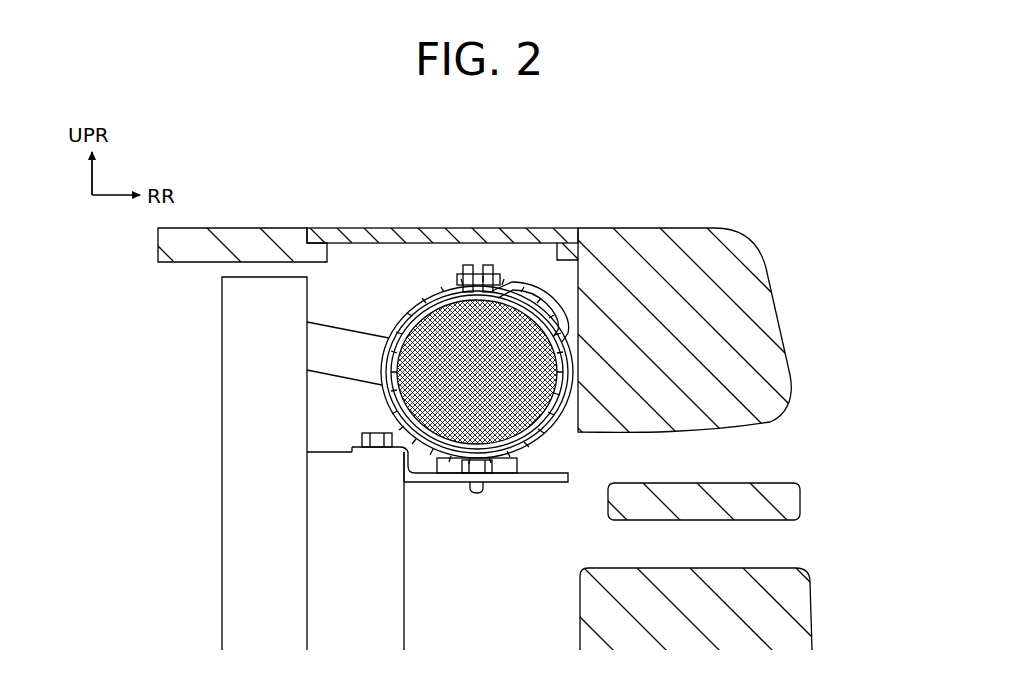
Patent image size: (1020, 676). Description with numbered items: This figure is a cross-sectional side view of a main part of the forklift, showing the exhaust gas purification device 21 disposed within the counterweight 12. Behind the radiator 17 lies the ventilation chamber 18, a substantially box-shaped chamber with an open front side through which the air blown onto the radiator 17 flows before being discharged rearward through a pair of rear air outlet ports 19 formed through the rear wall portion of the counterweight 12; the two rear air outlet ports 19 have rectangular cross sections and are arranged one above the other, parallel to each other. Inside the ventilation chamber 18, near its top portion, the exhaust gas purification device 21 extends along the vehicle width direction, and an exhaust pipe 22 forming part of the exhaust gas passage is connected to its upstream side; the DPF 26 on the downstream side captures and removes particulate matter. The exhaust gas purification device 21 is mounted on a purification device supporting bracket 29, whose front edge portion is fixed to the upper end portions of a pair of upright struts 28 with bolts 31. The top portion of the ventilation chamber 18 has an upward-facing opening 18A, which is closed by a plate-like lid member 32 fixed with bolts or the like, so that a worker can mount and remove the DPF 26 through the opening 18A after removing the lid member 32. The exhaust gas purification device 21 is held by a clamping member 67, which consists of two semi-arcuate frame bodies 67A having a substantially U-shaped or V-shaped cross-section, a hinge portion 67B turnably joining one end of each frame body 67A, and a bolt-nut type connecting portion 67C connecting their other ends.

The counterweight 12 is at (770, 285).
The radiator 17 is at (255, 330).
The ventilation chamber 18 is at (346, 293).
The opening 18A is at (553, 247).
The rear air outlet ports 19 is at (736, 483).
The exhaust gas purification device 21 is at (439, 280).
The exhaust pipe 22 is at (355, 352).
The DPF 26 is at (515, 370).
The struts 28 is at (345, 540).
The purification device supporting bracket 29 is at (538, 483).
The bolts 31 is at (365, 436).
The lid member 32 is at (511, 240).
The clamping member 67 is at (423, 456).
The frame bodies 67A is at (380, 395).
The hinge portion 67B is at (493, 474).
The bolt-nut type connecting portion 67C is at (472, 264).